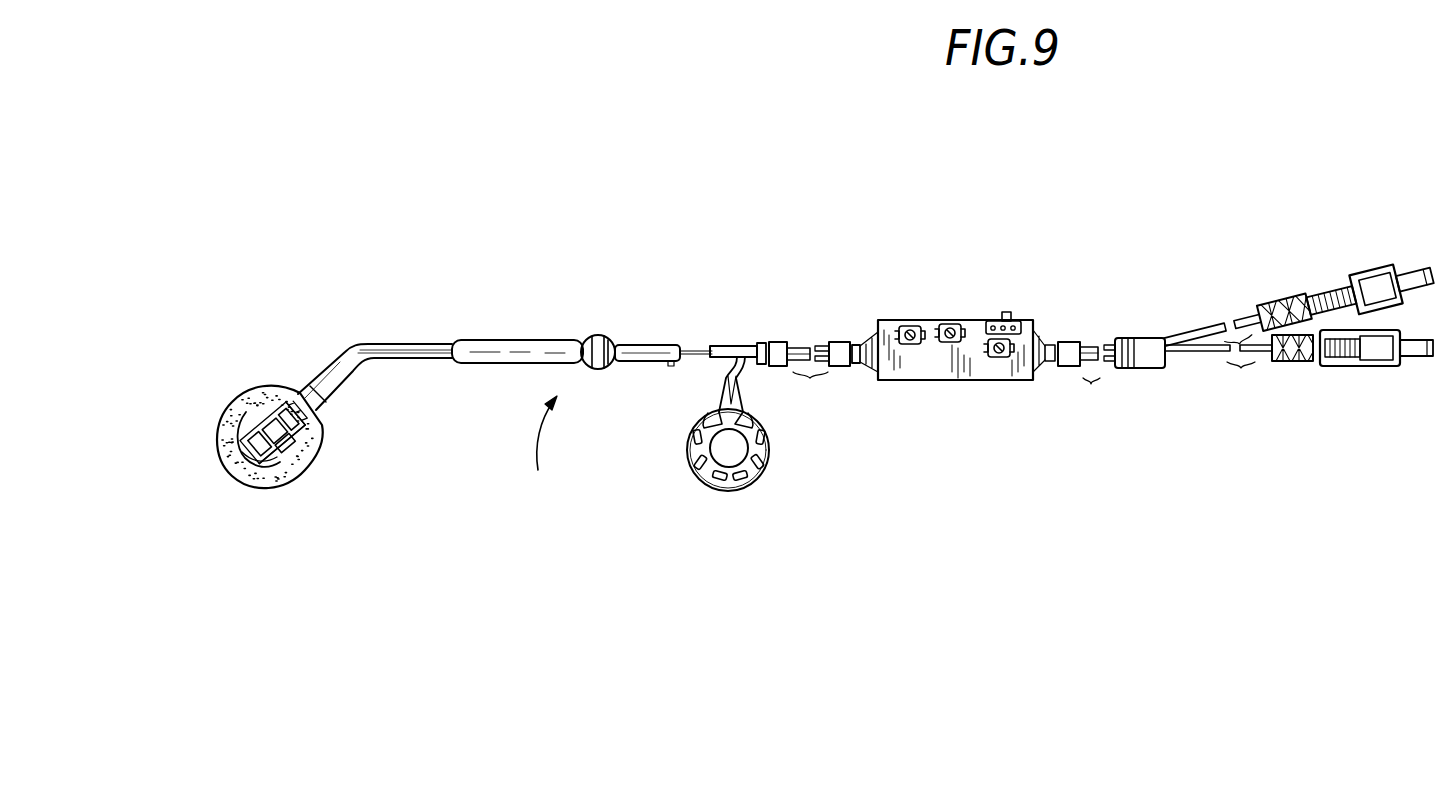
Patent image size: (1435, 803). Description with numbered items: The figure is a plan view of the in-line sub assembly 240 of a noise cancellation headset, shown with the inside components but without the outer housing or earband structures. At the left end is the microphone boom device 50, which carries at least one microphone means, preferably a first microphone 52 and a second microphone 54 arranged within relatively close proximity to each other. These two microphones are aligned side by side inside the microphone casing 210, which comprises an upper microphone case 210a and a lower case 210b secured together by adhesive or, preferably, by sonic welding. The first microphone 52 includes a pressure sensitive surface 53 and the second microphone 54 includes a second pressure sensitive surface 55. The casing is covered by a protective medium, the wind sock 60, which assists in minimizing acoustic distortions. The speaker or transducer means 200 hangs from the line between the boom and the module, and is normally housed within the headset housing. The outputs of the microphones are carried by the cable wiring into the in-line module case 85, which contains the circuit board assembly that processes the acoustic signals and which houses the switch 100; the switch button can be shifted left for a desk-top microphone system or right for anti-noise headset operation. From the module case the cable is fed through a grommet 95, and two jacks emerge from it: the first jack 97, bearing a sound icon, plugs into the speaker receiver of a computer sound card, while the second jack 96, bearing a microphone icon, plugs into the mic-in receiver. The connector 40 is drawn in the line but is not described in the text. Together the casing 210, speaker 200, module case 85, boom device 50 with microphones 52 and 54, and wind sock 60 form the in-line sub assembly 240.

The connector 40 is at (775, 342).
The microphone boom device 50 is at (510, 340).
The first microphone 52 is at (247, 483).
The pressure sensitive surface 53 is at (222, 473).
The second microphone 54 is at (288, 388).
The second pressure sensitive surface 55 is at (325, 419).
The wind sock 60 is at (215, 453).
The in-line module case 85 is at (938, 320).
The grommet 95 is at (1262, 316).
The second jack 96 is at (1338, 300).
The first jack 97 is at (1410, 368).
The switch 100 is at (1047, 275).
The speaker 200 is at (771, 449).
The microphone casing 210 is at (238, 427).
The upper microphone case 210a is at (254, 400).
The lower case 210b is at (295, 470).
The in-line sub assembly 240 is at (546, 458).